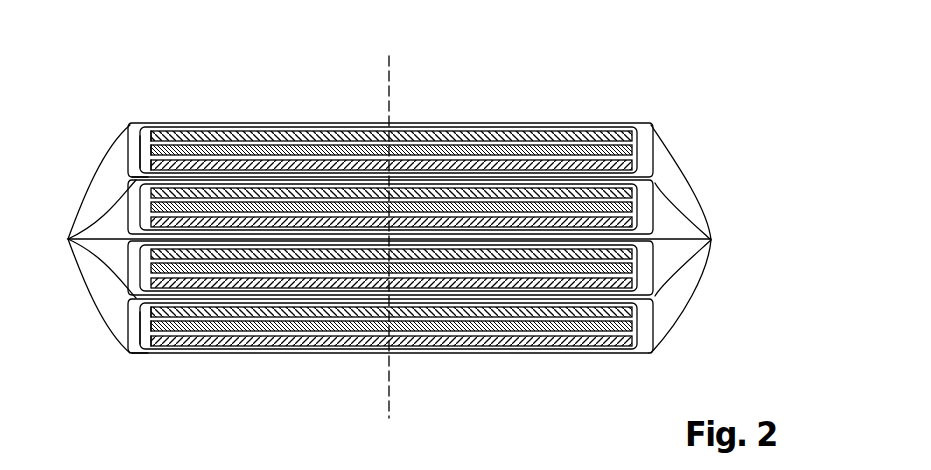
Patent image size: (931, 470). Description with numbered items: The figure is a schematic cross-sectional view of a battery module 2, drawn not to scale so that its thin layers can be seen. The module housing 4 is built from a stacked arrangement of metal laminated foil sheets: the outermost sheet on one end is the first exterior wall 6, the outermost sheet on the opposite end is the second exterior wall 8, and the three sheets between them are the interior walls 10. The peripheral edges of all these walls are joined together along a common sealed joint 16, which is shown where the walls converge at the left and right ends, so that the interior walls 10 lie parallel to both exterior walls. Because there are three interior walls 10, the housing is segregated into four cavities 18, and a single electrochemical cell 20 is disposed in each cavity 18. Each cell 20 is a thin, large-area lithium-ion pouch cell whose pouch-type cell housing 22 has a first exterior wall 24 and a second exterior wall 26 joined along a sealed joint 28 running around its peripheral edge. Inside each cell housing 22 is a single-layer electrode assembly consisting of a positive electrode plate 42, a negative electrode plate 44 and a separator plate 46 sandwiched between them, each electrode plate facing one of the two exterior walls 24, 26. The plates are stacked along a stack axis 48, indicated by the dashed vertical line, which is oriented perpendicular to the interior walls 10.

The battery module 2 is at (270, 76).
The module housing 4 is at (560, 115).
The first exterior wall 6 is at (390, 210).
The second exterior wall 8 is at (647, 345).
The interior wall 10 is at (670, 208).
The sealed joint 16 is at (703, 232).
The cavity 18 is at (99, 208).
The electrochemical cell 20 is at (633, 130).
The cell housing 22 is at (633, 190).
The first exterior wall 24 is at (134, 123).
The second exterior wall 26 is at (141, 157).
The sealed joint 28 is at (633, 145).
The positive electrode plate 42 is at (143, 131).
The negative electrode plate 44 is at (127, 172).
The separator plate 46 is at (150, 142).
The stack axis 48 is at (384, 86).